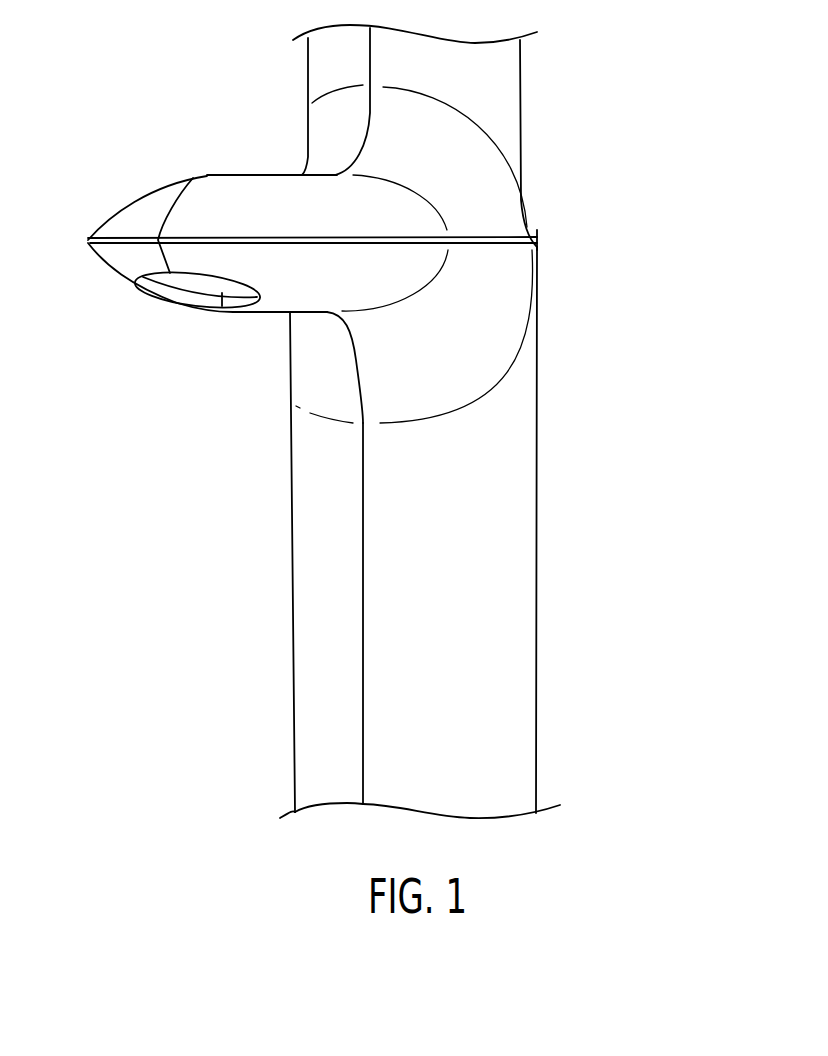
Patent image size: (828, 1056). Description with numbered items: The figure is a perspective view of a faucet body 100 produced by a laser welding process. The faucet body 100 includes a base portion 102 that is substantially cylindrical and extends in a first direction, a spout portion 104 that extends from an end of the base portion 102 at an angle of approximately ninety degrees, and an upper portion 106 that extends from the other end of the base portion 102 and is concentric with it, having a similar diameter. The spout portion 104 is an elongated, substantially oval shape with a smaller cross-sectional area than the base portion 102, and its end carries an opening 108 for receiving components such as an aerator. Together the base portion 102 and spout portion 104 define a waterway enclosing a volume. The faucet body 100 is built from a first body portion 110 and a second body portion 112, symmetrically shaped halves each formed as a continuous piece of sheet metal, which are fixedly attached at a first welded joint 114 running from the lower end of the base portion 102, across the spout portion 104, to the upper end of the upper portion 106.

The faucet body 100 is at (372, 421).
The base portion 102 is at (318, 462).
The spout portion 104 is at (148, 213).
The upper portion 106 is at (476, 150).
The opening 108 is at (165, 308).
The first body portion 110 is at (503, 638).
The second body portion 112 is at (318, 615).
The first welded joint 114 is at (362, 735).